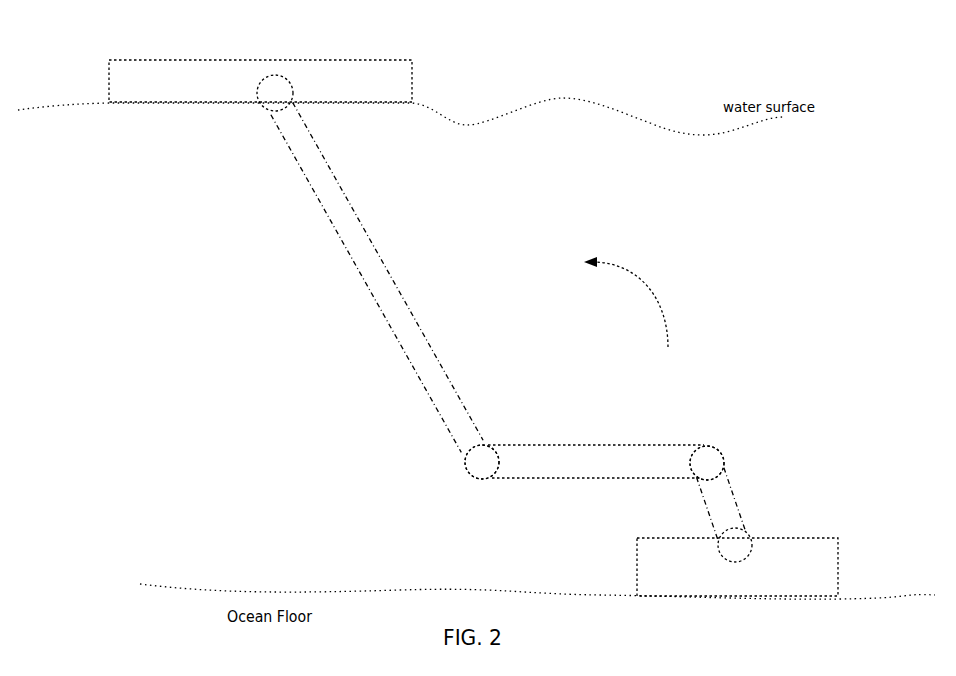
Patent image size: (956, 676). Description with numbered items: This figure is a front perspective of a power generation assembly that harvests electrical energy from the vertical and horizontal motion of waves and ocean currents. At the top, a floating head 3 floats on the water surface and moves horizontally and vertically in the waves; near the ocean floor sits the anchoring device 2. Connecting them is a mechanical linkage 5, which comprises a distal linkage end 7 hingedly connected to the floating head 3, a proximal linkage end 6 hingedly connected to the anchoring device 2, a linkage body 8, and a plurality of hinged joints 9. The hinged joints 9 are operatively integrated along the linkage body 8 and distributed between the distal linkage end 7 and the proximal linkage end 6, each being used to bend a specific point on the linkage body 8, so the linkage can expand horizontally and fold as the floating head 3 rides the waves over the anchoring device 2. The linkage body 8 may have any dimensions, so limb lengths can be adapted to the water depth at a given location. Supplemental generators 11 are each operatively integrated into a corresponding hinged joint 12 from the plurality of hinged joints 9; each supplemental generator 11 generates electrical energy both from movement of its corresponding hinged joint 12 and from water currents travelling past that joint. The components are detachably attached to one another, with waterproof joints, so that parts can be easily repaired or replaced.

The anchoring device 2 is at (742, 540).
The floating head 3 is at (353, 66).
The mechanical linkage 5 is at (628, 314).
The proximal linkage end 6 is at (790, 547).
The distal linkage end 7 is at (274, 100).
The linkage body 8 is at (402, 334).
The hinged joints 9 is at (489, 318).
The supplemental generators 11 is at (493, 442).
The corresponding hinged joint 12 is at (483, 468).